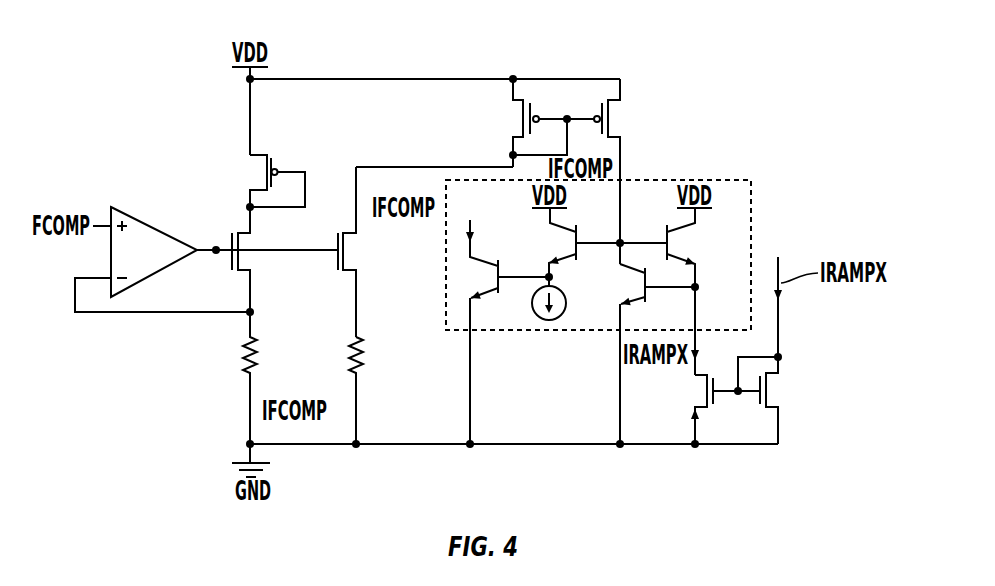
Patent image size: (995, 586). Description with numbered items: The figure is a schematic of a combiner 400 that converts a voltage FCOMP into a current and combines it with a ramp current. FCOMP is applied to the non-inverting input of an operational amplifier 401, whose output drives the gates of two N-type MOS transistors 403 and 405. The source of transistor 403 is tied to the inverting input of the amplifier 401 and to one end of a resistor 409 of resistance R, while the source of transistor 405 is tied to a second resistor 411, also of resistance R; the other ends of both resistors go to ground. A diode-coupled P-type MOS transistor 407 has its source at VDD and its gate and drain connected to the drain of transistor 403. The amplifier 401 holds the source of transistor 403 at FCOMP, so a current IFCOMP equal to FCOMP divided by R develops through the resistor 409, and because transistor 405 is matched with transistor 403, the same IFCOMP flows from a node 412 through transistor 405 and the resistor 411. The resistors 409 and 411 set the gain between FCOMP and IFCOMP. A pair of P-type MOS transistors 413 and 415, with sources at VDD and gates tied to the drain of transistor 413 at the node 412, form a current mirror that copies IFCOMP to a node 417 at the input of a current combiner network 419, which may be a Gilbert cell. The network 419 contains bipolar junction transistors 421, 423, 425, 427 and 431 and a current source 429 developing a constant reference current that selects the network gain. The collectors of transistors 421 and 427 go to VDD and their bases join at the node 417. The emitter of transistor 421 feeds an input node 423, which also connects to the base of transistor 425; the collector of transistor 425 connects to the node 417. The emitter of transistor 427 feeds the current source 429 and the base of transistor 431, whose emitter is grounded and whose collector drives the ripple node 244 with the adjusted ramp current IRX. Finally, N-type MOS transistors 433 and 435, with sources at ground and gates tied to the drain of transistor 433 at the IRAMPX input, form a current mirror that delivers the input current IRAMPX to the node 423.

The combiner 400 is at (176, 394).
The operational amplifier 401 is at (158, 262).
The N-type MOS transistor 403 is at (238, 232).
The N-type MOS transistor 405 is at (338, 238).
The P-type MOS transistor 407 is at (269, 158).
The resistor 409 is at (253, 341).
The resistor 411 is at (351, 371).
The node 412 is at (385, 167).
The P-type MOS transistor 413 is at (521, 101).
The P-type MOS transistor 415 is at (612, 100).
The node 417 is at (625, 243).
The current combiner network 419 is at (694, 180).
The bipolar junction transistor 421 is at (688, 257).
The input node 423 is at (698, 286).
The bipolar junction transistor 425 is at (636, 300).
The bipolar junction transistor 427 is at (566, 226).
The current source 429 is at (562, 292).
The bipolar junction transistor 431 is at (500, 265).
The N-type MOS transistor 433 is at (768, 380).
The N-type MOS transistor 435 is at (706, 382).
The ripple node 244 is at (470, 220).